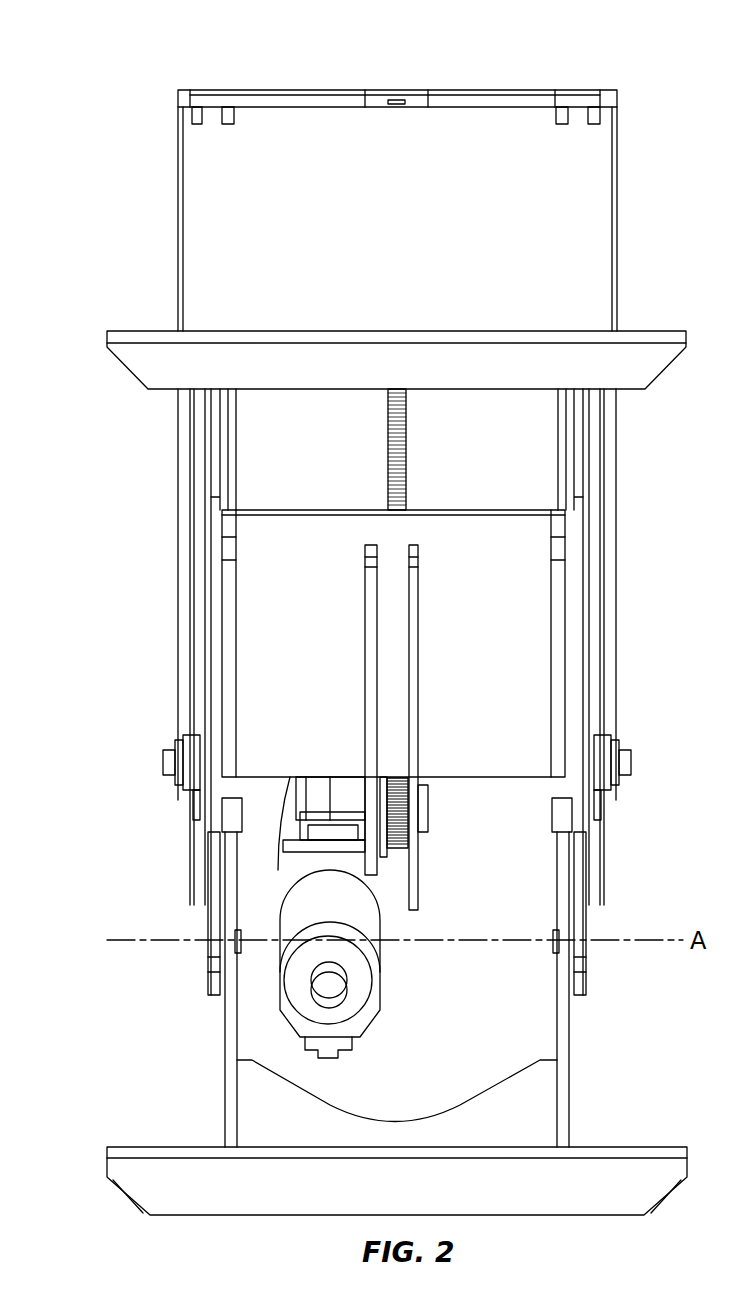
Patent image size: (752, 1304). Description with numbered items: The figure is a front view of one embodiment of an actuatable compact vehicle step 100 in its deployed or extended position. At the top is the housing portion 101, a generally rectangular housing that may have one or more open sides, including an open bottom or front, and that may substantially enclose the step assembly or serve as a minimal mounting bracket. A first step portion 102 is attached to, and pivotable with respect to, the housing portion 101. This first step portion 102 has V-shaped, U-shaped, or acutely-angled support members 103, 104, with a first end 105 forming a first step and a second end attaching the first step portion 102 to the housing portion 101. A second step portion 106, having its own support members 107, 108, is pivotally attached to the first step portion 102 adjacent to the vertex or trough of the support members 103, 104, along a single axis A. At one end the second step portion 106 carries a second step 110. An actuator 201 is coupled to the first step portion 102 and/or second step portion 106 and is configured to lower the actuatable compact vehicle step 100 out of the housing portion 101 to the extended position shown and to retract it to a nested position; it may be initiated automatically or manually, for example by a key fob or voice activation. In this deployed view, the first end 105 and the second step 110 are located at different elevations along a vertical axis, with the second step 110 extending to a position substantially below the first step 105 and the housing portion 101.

The actuatable compact vehicle step 100 is at (626, 62).
The housing portion 101 is at (178, 224).
The first step portion 102 is at (65, 332).
The support member 103 is at (580, 570).
The support member 104 is at (215, 570).
The first end 105 is at (643, 331).
The second step portion 106 is at (65, 942).
The support member 107 is at (570, 1097).
The support member 108 is at (225, 1092).
The second step 110 is at (644, 1147).
The actuator 201 is at (295, 910).